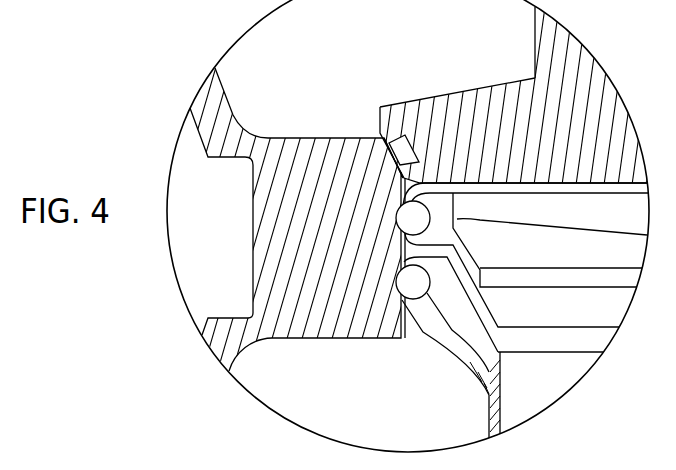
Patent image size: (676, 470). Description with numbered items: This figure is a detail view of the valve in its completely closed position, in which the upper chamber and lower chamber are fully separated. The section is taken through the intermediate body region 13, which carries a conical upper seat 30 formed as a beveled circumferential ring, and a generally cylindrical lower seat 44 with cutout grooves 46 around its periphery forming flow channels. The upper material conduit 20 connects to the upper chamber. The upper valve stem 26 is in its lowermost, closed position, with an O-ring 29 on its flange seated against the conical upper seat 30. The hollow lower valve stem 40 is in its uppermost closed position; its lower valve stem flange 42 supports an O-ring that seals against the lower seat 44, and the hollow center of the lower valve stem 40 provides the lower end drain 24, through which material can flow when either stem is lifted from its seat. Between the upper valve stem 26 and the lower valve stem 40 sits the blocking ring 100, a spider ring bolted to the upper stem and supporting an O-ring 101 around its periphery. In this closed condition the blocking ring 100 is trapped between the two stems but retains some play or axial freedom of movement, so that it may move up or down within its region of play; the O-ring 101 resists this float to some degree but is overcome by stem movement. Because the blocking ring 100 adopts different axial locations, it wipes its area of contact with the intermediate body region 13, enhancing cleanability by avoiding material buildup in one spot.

The intermediate body region 13 is at (277, 236).
The upper material conduit 20 is at (457, 105).
The lower end drain 24 is at (545, 392).
The upper valve stem 26 is at (548, 40).
The O-ring 29 is at (420, 143).
The conical upper seat 30 is at (398, 173).
The lower valve stem 40 is at (490, 418).
The lower valve stem flange 42 is at (432, 325).
The lower seat 44 is at (413, 282).
The cutout grooves 46 is at (388, 309).
The blocking ring 100 is at (440, 203).
The O-ring 101 is at (413, 218).